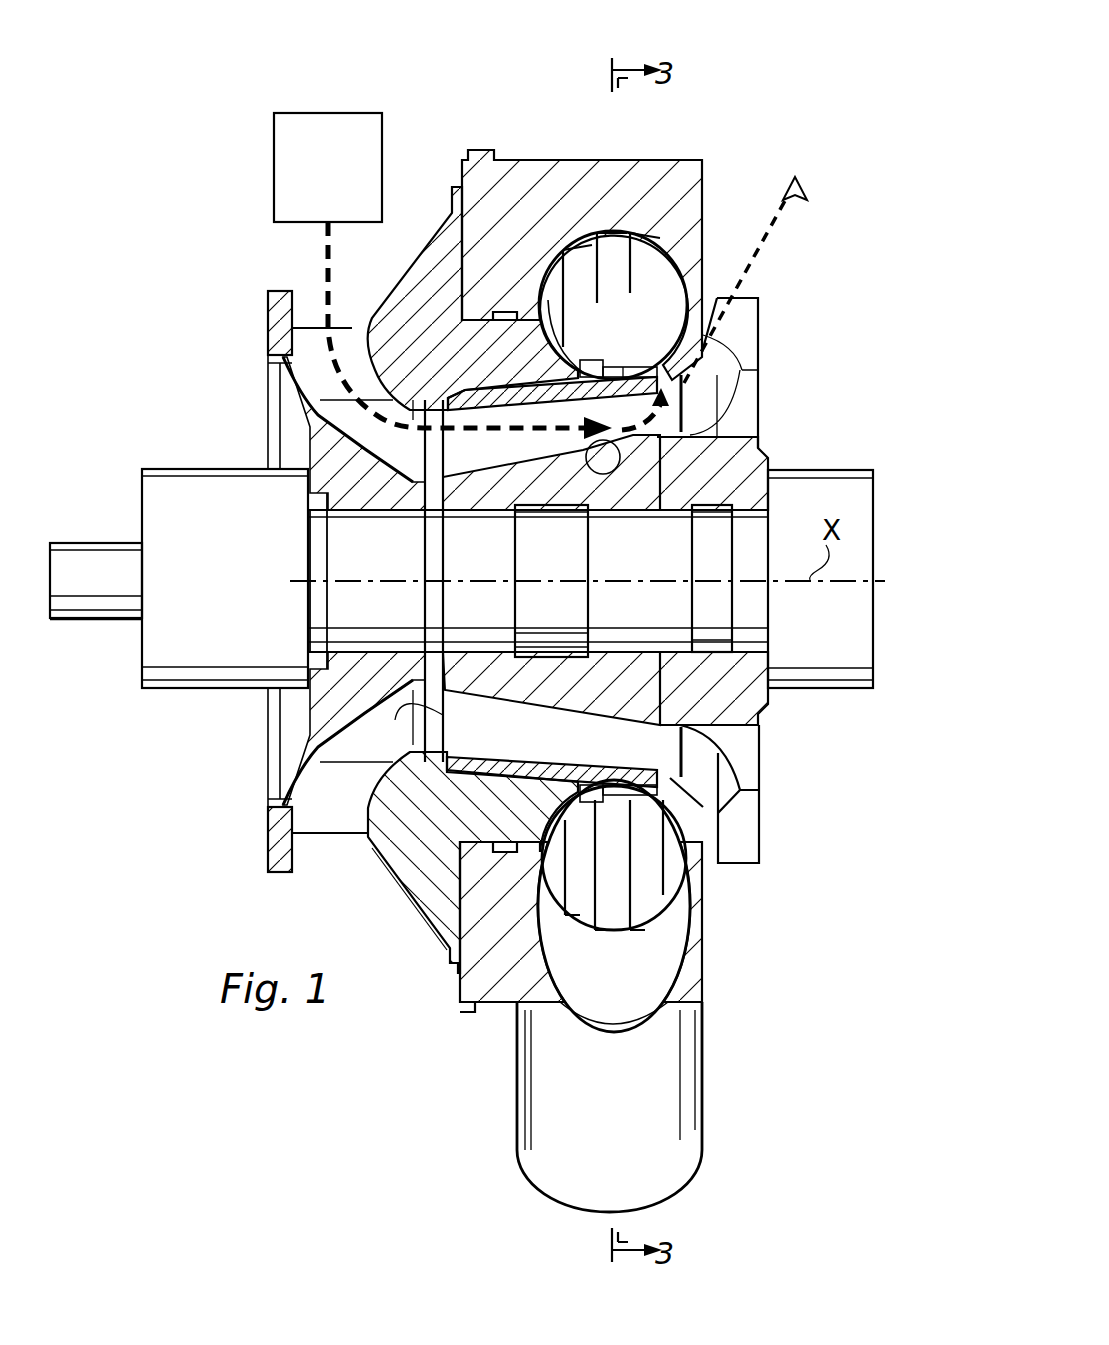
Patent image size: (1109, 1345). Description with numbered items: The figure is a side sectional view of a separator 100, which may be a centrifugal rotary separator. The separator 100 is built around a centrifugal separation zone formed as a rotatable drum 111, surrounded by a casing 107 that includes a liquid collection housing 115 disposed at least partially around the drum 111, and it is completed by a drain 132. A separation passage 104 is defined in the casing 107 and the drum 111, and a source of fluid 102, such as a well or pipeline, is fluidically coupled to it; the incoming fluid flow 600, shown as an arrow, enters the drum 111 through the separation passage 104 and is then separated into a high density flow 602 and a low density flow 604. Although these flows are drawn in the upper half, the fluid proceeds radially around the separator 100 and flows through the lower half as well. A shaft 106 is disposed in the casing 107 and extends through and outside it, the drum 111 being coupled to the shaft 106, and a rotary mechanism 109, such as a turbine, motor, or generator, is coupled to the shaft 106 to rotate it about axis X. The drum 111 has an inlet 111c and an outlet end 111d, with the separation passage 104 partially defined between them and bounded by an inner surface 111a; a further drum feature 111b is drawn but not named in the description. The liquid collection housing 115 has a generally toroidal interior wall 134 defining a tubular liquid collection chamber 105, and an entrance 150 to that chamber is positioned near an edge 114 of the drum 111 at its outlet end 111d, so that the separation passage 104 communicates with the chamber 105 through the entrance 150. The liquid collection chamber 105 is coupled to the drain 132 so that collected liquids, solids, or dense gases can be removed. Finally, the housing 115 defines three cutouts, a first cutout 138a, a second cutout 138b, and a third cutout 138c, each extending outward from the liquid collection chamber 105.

The separator 100 is at (202, 70).
The source of fluid 102 is at (328, 113).
The separation passage 104 is at (308, 296).
The liquid collection chamber 105 is at (702, 210).
The shaft 106 is at (98, 543).
The casing 107 is at (440, 220).
The rotary mechanism 109 is at (250, 598).
The rotatable drum 111 is at (505, 390).
The inner surface 111a is at (590, 452).
The gap 111b is at (458, 400).
The inlet 111c is at (443, 441).
The outlet end 111d is at (684, 413).
The edge 114 is at (658, 364).
The liquid collection housing 115 is at (520, 160).
The drain 132 is at (702, 1100).
The interior wall 134 is at (555, 268).
The first cutout 138a is at (568, 248).
The second cutout 138b is at (614, 235).
The third cutout 138c is at (657, 275).
The entrance 150 is at (656, 350).
The fluid flow 600 is at (330, 278).
The high density flow 602 is at (717, 377).
The low density flow 604 is at (778, 237).